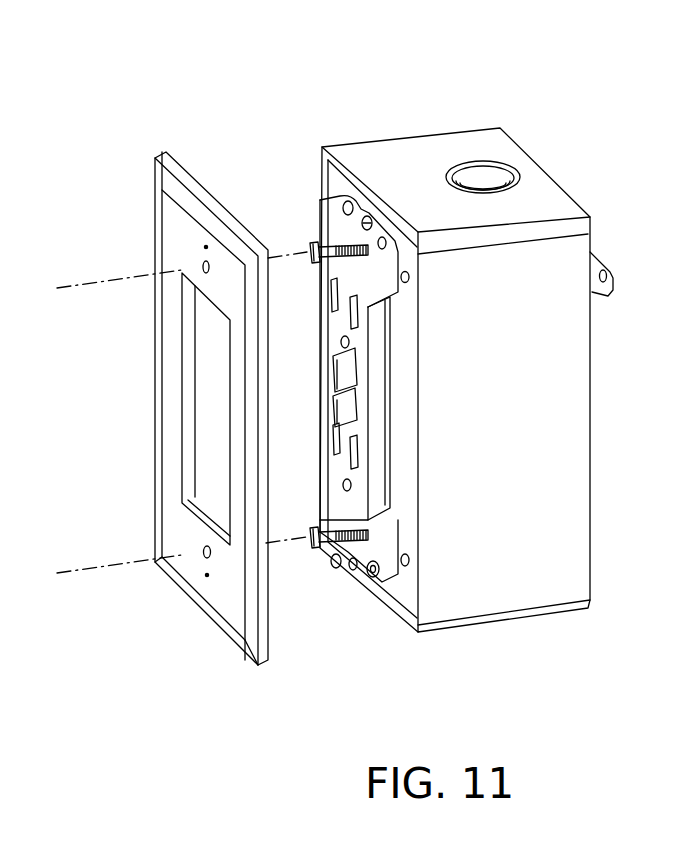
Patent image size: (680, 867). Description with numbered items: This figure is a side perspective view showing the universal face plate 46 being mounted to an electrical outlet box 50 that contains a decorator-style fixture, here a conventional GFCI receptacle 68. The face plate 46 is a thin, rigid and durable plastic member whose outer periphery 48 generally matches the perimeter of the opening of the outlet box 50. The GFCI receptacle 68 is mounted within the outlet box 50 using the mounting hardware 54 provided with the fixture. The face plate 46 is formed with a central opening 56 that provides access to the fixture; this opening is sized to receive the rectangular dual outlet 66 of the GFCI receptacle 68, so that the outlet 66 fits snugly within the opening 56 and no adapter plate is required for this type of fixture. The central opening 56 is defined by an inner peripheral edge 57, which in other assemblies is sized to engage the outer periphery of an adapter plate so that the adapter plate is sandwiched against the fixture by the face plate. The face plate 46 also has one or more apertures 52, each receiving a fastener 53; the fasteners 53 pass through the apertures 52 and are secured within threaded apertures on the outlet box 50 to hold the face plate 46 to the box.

The universal face plate 46 is at (240, 632).
The outer periphery 48 is at (268, 663).
The electrical outlet box 50 is at (482, 149).
The apertures 52 is at (203, 262).
The fastener 53 is at (320, 236).
The mounting hardware 54 is at (328, 200).
The central opening 56 is at (187, 313).
The inner peripheral edge 57 is at (190, 355).
The rectangular dual outlet 66 is at (372, 497).
The GFCI receptacle 68 is at (405, 477).